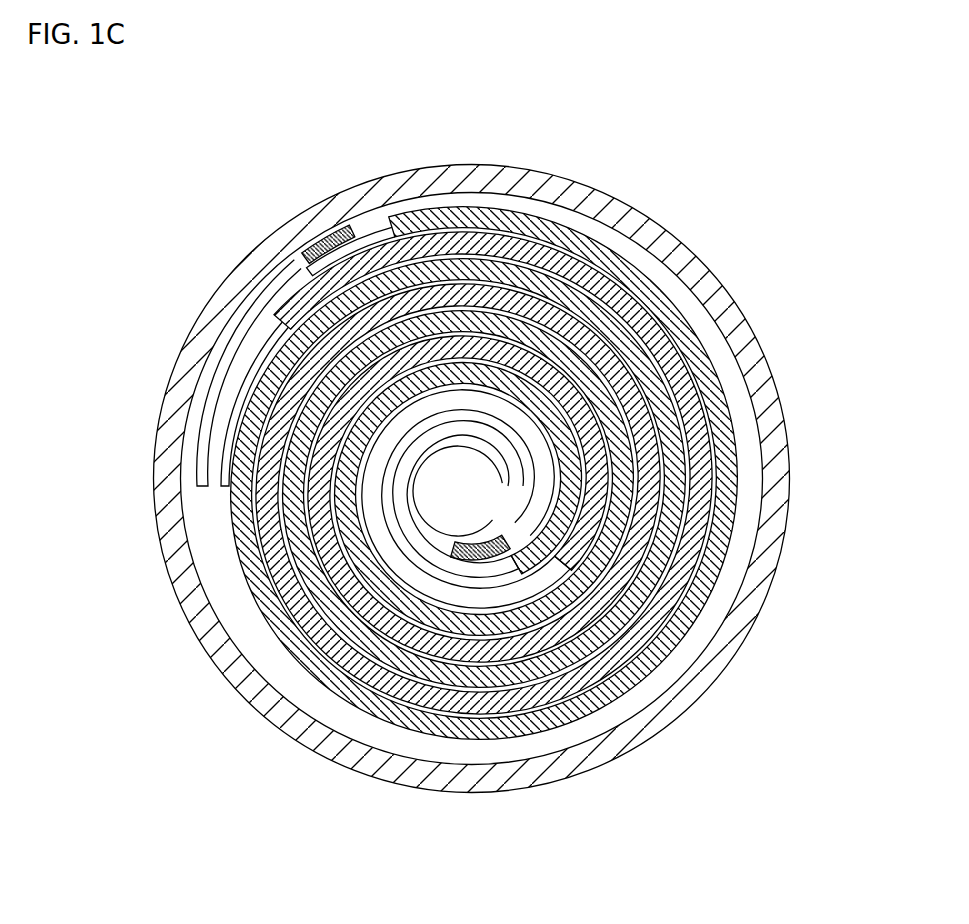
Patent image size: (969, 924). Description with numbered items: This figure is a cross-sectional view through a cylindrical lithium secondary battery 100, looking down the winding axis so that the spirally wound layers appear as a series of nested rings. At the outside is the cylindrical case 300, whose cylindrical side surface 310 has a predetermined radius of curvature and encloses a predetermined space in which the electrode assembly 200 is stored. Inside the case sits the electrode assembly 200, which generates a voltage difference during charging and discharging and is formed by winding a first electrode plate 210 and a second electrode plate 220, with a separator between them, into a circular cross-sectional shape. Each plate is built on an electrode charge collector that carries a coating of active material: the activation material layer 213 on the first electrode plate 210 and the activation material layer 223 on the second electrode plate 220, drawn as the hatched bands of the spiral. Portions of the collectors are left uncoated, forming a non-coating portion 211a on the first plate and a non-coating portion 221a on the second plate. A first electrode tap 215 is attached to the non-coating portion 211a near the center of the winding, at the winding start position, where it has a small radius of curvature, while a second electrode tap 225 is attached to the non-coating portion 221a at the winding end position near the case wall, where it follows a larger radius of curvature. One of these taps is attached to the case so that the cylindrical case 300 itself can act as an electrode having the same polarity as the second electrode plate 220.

The cylindrical lithium secondary battery 100 is at (749, 179).
The electrode assembly 200 is at (691, 310).
The first electrode plate 210 is at (499, 541).
The non-coating portion 211a is at (559, 560).
The activation material layer 213 is at (598, 562).
The first electrode tap 215 is at (508, 553).
The second electrode plate 220 is at (484, 396).
The non-coating portion 221a is at (365, 227).
The activation material layer 223 is at (405, 212).
The second electrode tap 225 is at (307, 209).
The cylindrical case 300 is at (220, 385).
The cylindrical side surface 310 is at (165, 493).